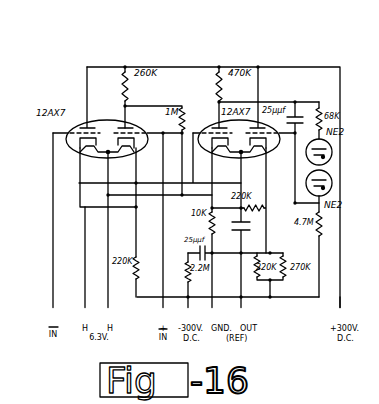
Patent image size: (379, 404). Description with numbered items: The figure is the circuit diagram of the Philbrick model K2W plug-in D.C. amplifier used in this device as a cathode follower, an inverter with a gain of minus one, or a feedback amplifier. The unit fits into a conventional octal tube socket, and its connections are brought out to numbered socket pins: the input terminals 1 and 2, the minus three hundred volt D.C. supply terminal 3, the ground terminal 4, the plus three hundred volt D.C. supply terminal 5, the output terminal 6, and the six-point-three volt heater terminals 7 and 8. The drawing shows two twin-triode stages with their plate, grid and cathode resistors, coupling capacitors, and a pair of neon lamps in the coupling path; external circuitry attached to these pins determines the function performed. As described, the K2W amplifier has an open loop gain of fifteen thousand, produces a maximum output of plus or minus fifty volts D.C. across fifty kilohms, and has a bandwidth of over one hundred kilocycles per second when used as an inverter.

The input terminal (+ IN) 1 is at (163, 227).
The input terminal (- IN) 2 is at (53, 227).
The -300 V D.C. supply terminal 3 is at (188, 287).
The ground terminal 4 is at (212, 234).
The +300 V D.C. supply terminal 5 is at (340, 309).
The output (reference) terminal 6 is at (241, 309).
The 6.3 V heater terminal 7 is at (85, 264).
The 6.3 V heater terminal 8 is at (108, 236).